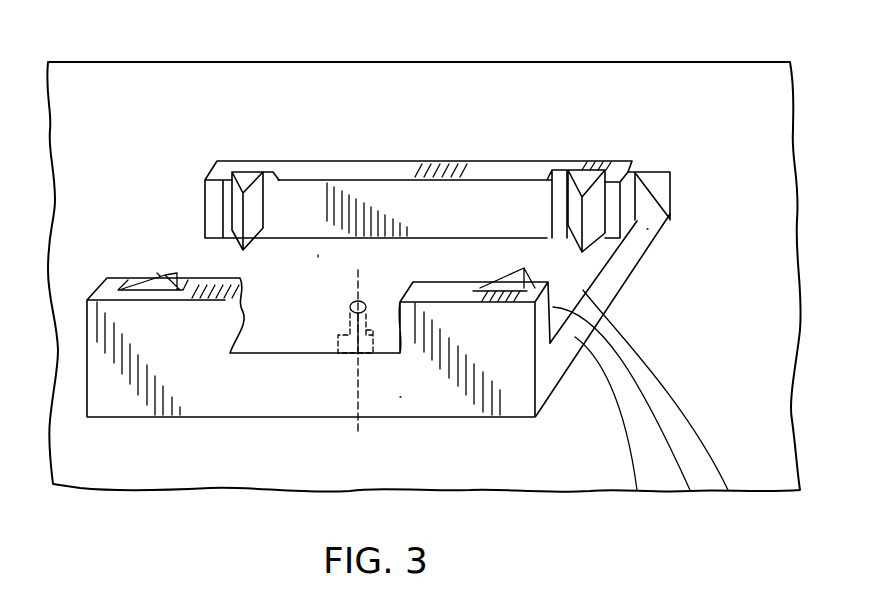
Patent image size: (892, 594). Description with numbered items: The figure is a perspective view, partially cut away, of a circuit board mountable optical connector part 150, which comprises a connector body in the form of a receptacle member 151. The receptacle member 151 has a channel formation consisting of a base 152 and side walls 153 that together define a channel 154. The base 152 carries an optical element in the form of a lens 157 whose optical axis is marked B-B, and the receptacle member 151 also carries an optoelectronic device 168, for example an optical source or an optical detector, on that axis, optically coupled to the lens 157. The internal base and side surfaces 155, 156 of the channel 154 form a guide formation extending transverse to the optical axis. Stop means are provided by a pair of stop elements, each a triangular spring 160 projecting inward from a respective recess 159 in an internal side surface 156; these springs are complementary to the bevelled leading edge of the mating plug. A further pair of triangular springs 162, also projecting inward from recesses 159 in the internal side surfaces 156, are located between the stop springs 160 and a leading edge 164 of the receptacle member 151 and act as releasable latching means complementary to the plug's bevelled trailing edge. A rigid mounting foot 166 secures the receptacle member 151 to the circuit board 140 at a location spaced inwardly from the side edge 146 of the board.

The circuit board 140 is at (188, 470).
The side edge of the circuit board 146 is at (454, 61).
The board mounted optical connector part 150 is at (568, 391).
The receptacle member 151 is at (400, 397).
The base 152 is at (647, 229).
The side walls 153 is at (627, 184).
The channel 154 is at (318, 257).
The internal base surface 155 is at (665, 403).
The internal side surface 156 is at (510, 210).
The lens 157 is at (350, 304).
The recess 159 is at (177, 272).
The triangular spring 160 is at (160, 276).
The triangular spring 162 is at (588, 240).
The leading edge 164 is at (614, 426).
The rigid mounting foot 166 is at (663, 207).
The optoelectronic device 168 is at (345, 353).